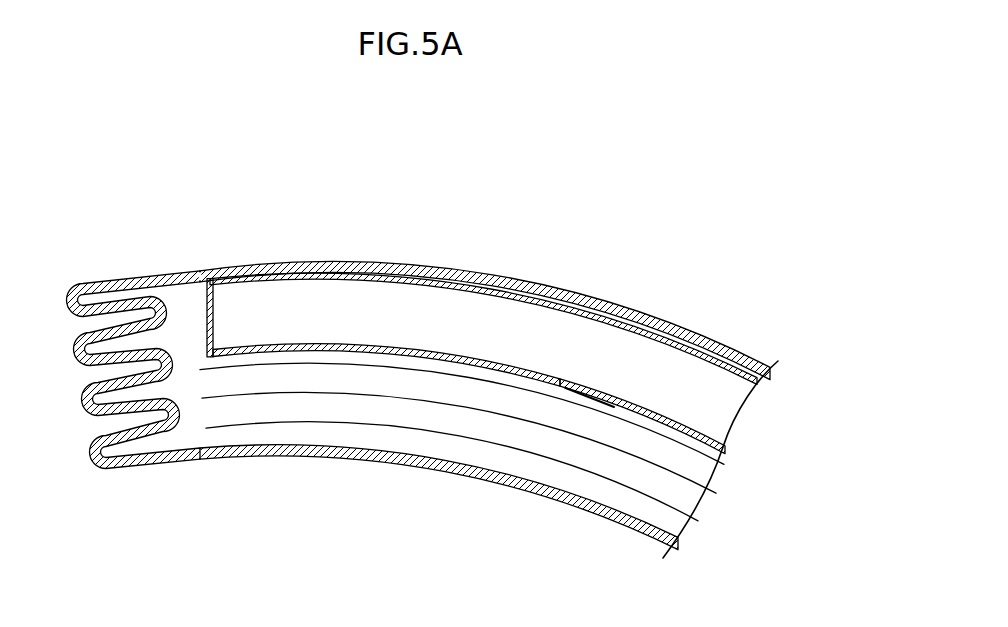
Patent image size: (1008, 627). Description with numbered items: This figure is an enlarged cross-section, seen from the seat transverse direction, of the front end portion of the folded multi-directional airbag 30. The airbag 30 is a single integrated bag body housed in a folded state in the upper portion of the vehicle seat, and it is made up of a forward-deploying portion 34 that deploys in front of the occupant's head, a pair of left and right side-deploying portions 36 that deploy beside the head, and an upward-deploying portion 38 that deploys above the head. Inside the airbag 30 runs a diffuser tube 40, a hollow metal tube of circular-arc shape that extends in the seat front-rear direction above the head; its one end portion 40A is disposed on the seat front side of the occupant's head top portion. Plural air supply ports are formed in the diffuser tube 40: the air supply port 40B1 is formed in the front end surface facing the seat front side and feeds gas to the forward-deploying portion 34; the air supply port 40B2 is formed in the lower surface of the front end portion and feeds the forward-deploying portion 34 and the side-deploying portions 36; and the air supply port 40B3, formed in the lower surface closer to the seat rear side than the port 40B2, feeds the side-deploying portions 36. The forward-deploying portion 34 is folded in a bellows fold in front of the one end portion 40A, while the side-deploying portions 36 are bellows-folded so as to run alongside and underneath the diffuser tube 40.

The multi-directional airbag 30 is at (322, 122).
The forward-deploying portion 34 is at (102, 281).
The side-deploying portions 36 is at (310, 377).
The upward-deploying portion 38 is at (347, 259).
The diffuser tube 40 is at (413, 358).
The one end portion 40A is at (222, 357).
The air supply port 40B1 is at (208, 307).
The air supply port 40B2 is at (284, 357).
The air supply port 40B3 is at (583, 397).